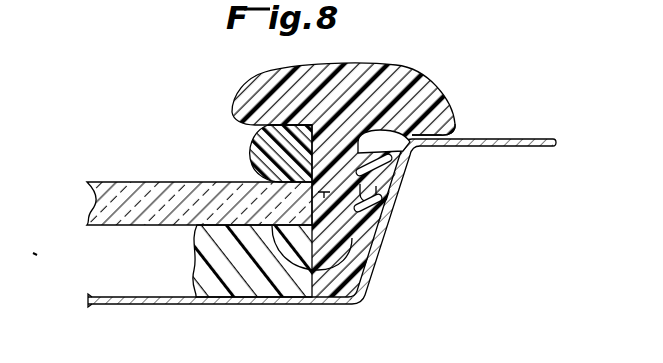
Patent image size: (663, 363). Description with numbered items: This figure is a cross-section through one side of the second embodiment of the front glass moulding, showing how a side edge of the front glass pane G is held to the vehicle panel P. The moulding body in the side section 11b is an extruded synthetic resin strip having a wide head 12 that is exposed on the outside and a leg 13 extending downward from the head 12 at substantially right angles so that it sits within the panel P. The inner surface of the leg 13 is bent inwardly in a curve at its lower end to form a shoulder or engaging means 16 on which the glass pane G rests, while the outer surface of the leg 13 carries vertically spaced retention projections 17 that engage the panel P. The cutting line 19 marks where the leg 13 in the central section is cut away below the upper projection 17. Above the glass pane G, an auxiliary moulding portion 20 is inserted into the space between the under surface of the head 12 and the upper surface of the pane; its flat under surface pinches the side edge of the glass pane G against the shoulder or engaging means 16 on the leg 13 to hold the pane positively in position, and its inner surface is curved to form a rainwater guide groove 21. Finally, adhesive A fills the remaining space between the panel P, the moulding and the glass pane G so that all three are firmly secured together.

The front glass pane G is at (132, 181).
The adhesive A is at (232, 306).
The panel P is at (523, 138).
The head 12 is at (352, 89).
The side section 11b is at (398, 79).
The leg 13 is at (390, 170).
The shoulder or engaging means 16 is at (283, 298).
The retention projection 17 is at (380, 202).
The cutting line 19 is at (374, 216).
The auxiliary moulding portion 20 is at (252, 165).
The rainwater guide groove 21 is at (268, 141).